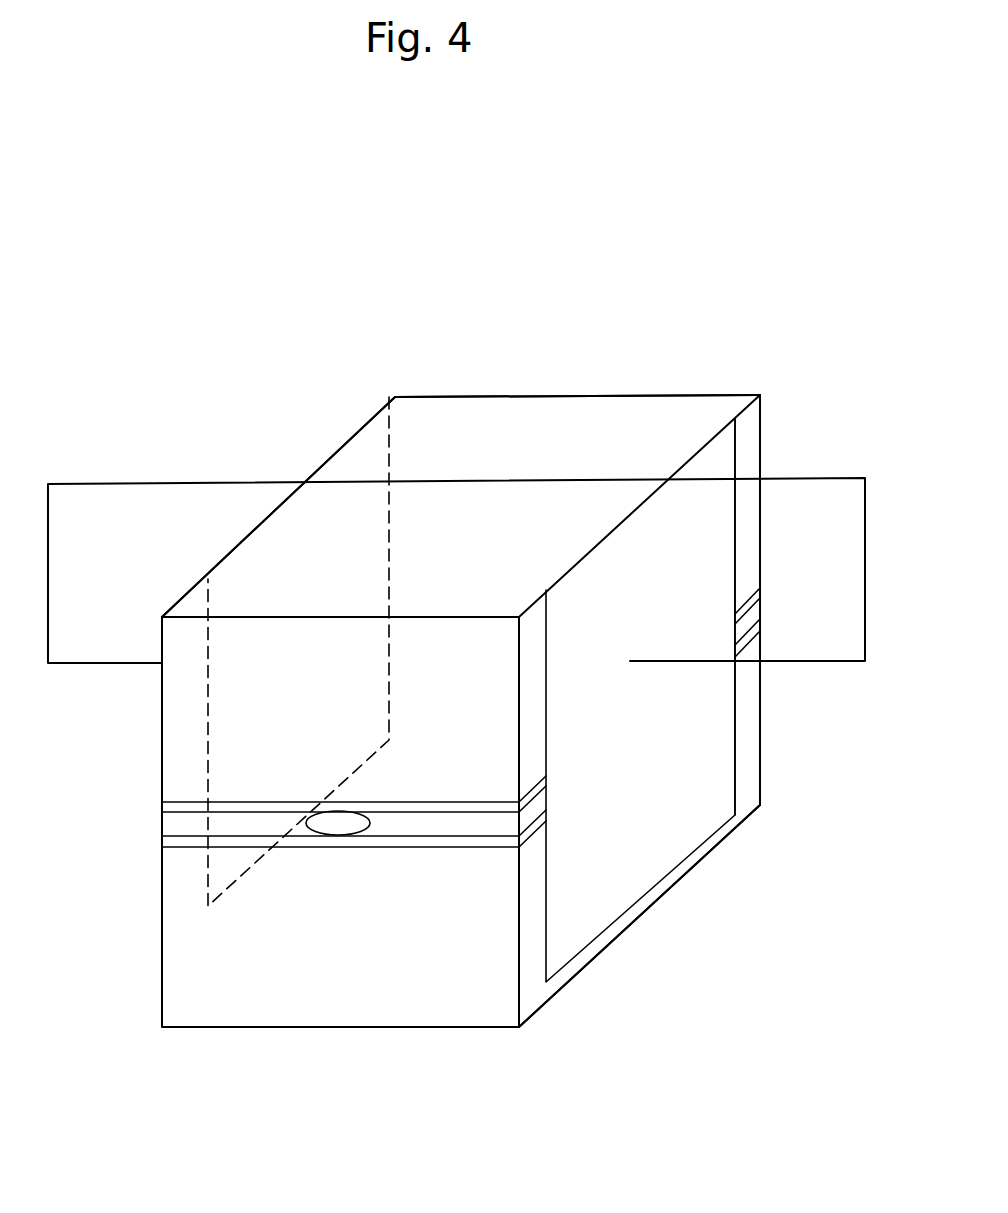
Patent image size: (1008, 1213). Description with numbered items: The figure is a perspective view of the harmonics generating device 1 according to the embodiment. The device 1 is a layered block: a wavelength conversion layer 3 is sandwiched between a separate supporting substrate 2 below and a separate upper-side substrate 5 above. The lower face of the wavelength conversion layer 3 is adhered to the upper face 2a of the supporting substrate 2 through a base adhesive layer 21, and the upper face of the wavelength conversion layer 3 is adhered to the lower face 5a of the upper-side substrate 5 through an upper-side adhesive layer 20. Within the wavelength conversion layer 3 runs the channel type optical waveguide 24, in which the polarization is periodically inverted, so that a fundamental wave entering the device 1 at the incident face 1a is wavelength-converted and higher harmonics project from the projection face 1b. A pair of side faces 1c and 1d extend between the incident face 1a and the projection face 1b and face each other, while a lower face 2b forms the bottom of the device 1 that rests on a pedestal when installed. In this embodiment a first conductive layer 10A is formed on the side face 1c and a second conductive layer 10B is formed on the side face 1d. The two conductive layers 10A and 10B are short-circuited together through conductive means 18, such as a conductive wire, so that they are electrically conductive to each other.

The harmonics generating device 1 is at (772, 389).
The incident face 1a is at (386, 648).
The projection face 1b is at (535, 396).
The side face 1c is at (744, 418).
The side face 1d is at (343, 447).
The supporting substrate 2 is at (748, 733).
The upper face of supporting substrate 2a is at (460, 830).
The lower face of device 2b is at (546, 1004).
The wavelength conversion layer 3 is at (752, 622).
The upper-side substrate 5 is at (752, 538).
The lower face of upper-side substrate 5a is at (423, 817).
The first conductive layer 10A is at (720, 788).
The second conductive layer 10B is at (273, 553).
The conductive means 18 is at (825, 478).
The upper-side adhesive layer 20 is at (253, 802).
The base adhesive layer 21 is at (275, 852).
The channel type optical waveguide 24 is at (340, 822).